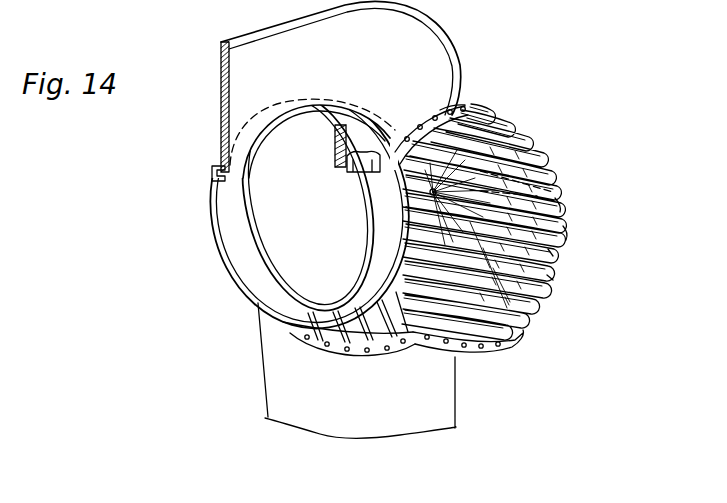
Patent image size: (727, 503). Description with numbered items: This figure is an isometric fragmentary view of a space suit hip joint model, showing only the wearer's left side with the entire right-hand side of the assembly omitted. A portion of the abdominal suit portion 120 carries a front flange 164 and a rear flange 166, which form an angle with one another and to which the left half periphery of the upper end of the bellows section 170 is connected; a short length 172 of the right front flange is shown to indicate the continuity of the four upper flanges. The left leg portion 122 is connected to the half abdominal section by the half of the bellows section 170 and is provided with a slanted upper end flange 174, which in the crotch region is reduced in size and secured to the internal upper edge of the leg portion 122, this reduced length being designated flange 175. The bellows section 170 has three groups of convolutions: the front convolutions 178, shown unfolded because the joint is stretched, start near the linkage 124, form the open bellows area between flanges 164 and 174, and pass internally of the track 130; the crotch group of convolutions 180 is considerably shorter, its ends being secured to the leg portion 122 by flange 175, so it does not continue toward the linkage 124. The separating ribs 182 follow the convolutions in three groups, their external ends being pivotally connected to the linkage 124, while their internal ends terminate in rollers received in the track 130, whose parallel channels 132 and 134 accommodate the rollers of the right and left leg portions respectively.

The abdominal suit portion 120 is at (351, 48).
The left leg portion 122 is at (357, 370).
The linkage 124 is at (490, 202).
The track 130 is at (235, 229).
The channel 132 is at (382, 133).
The channel 134 is at (389, 136).
The front flange 164 is at (447, 108).
The rear flange 166 is at (228, 121).
The bellows section 170 is at (571, 168).
The short length of right front flange 172 is at (342, 178).
The upper end flange 174 is at (462, 352).
The reduced length of flange 175 is at (302, 338).
The front convolutions 178 is at (567, 234).
The crotch convolutions 180 is at (353, 331).
The separating ribs 182 is at (553, 278).